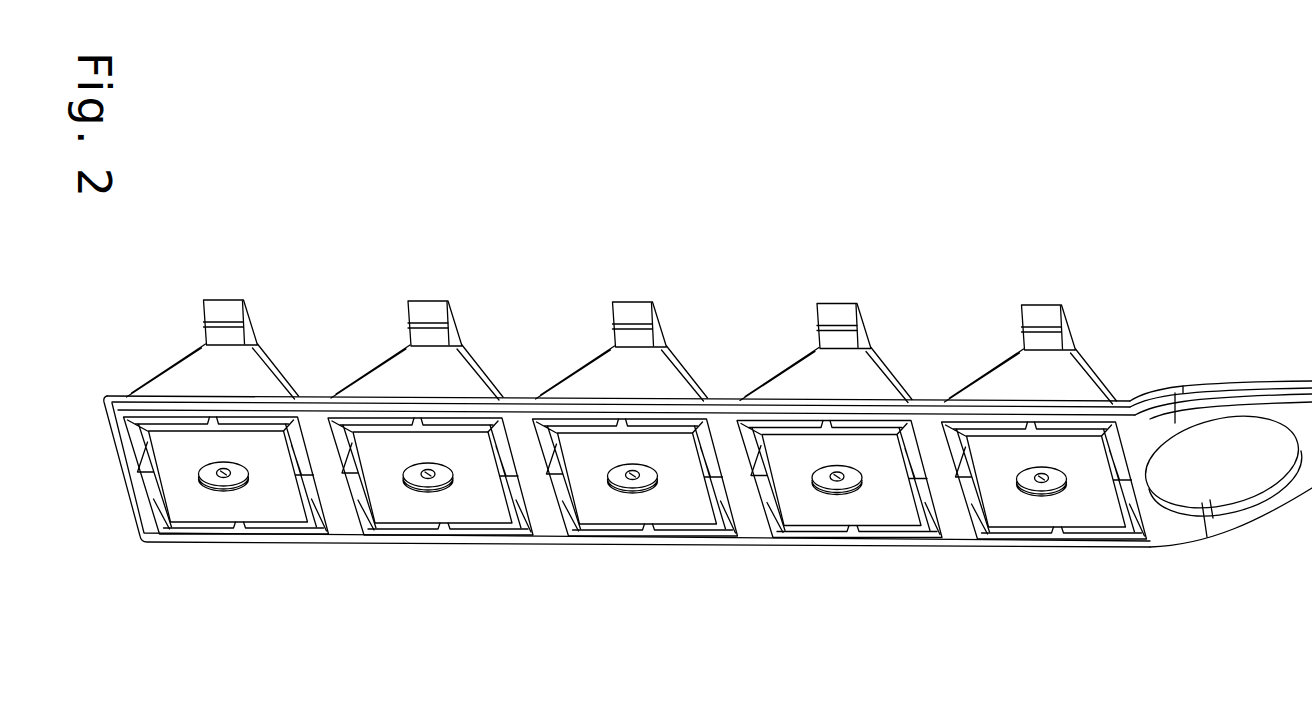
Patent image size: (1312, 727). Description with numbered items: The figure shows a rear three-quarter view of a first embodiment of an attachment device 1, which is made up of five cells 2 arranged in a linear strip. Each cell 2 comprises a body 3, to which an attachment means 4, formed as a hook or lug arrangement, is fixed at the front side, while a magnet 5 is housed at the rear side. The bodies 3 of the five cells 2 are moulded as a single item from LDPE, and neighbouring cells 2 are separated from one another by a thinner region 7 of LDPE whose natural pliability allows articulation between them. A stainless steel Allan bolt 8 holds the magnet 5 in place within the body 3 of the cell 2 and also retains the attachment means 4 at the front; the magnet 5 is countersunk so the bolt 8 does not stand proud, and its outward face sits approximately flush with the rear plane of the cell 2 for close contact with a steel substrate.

The attachment device 1 is at (1043, 211).
The cell 2 is at (1284, 572).
The body 3 is at (1012, 330).
The attachment means 4 is at (753, 593).
The magnet 5 is at (1032, 526).
The thinner region 7 is at (1046, 531).
The Allan bolt 8 is at (1077, 549).